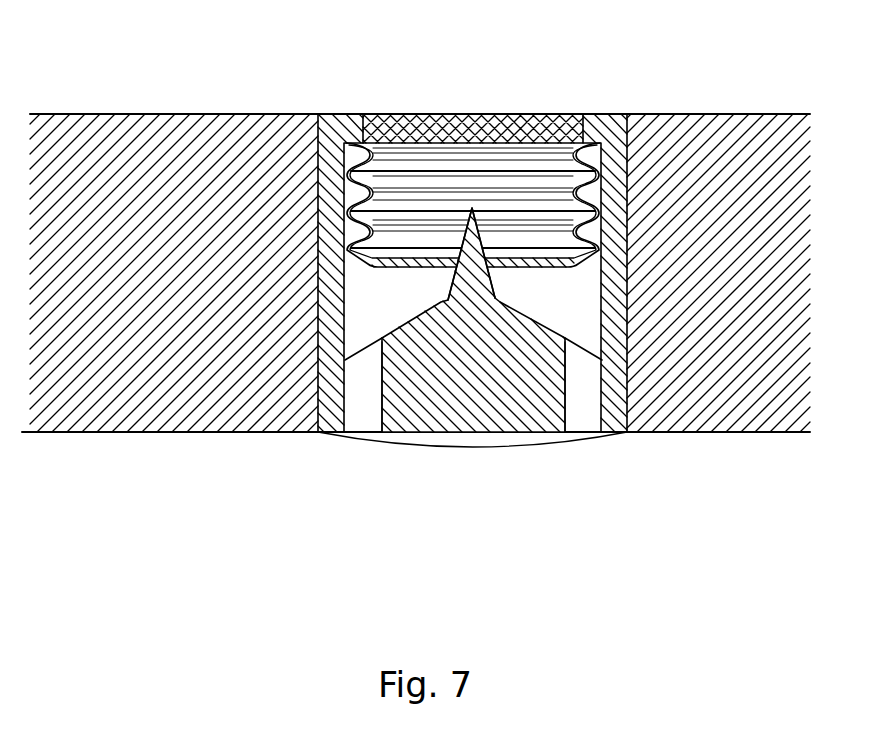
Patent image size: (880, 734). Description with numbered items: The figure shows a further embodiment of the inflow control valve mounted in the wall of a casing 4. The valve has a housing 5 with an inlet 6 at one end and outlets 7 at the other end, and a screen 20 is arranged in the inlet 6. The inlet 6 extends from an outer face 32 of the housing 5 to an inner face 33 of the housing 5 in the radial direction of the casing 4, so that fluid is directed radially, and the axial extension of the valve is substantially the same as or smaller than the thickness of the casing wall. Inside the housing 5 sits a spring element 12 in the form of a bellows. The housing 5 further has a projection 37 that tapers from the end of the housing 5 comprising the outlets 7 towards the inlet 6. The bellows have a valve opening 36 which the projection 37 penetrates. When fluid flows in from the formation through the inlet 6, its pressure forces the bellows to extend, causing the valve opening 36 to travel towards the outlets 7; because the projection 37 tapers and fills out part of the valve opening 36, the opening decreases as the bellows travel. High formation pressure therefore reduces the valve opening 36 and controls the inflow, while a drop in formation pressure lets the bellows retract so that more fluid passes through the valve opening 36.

The casing 4 is at (43, 418).
The housing 5 is at (338, 412).
The inlet 6 is at (515, 138).
The outlet 7 is at (585, 408).
The spring element 12 is at (603, 157).
The screen 20 is at (465, 271).
The outer face 32 is at (420, 113).
The inner face 33 is at (515, 138).
The valve opening 36 is at (478, 265).
The projection 37 is at (473, 250).